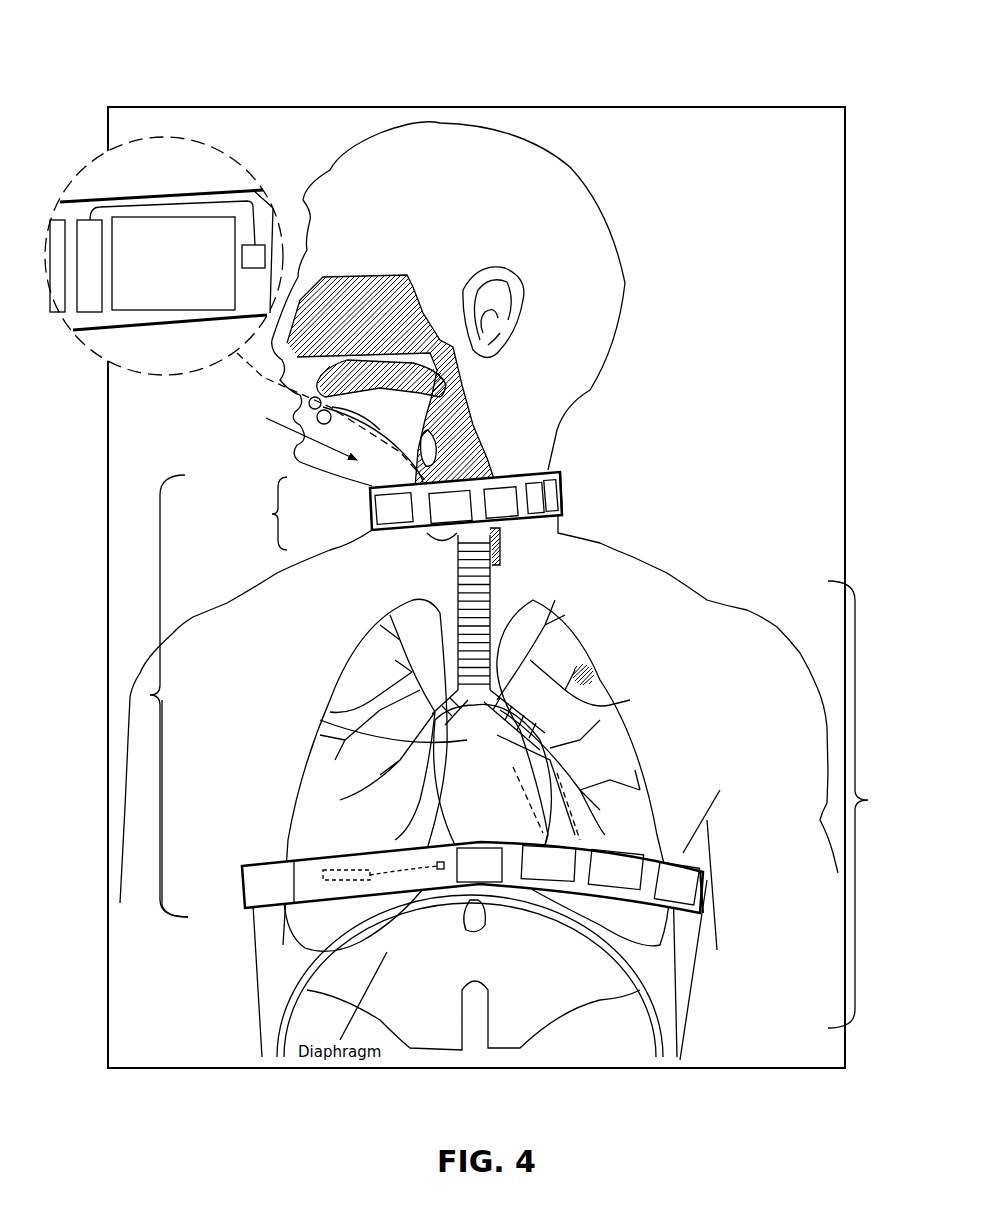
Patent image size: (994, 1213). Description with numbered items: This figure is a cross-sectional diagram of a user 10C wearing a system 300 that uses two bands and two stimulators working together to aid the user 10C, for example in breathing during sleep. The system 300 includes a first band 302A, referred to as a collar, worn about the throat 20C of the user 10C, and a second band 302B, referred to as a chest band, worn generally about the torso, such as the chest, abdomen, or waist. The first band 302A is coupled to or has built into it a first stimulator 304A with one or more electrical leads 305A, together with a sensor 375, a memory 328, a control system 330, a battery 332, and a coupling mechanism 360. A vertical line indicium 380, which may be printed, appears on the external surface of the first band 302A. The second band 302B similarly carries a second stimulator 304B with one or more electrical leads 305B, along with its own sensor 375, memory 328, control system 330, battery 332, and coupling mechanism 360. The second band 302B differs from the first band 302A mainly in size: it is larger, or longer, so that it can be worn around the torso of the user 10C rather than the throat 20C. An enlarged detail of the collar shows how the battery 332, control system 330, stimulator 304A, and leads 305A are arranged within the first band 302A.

The user 10C is at (220, 90).
The throat 20C is at (251, 513).
The system 300 is at (153, 693).
The first band 302A is at (380, 472).
The second band 302B is at (378, 842).
The first stimulator 304A is at (62, 200).
The second stimulator 304B is at (298, 905).
The electrical leads 305A is at (258, 243).
The electrical leads 305B is at (430, 873).
The memory 328 is at (713, 830).
The control system 330 is at (140, 317).
The battery 332 is at (70, 297).
The coupling mechanism 360 is at (562, 512).
The sensor 375 is at (540, 533).
The vertical line indicium 380 is at (560, 475).